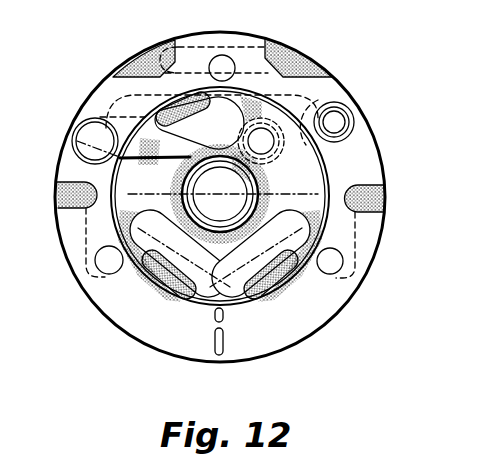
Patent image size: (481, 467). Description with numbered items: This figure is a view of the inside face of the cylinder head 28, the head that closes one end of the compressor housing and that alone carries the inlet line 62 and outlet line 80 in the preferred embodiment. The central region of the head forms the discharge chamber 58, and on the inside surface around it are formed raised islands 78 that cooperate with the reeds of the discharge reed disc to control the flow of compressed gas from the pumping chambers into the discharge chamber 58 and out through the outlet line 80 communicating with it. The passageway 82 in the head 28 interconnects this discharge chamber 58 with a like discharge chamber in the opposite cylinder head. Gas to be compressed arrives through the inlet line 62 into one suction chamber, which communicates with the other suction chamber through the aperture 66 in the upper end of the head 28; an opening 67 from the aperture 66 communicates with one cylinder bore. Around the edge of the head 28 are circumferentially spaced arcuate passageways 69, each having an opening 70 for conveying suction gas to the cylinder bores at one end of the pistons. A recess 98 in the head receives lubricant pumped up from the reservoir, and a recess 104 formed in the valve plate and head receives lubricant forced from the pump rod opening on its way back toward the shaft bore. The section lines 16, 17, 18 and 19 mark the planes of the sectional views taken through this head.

The section line 16- 16 is at (57, 140).
The section line 17- 17 is at (93, 142).
The section line 18- 18 is at (148, 198).
The section line 19- 19 is at (212, 152).
The cylinder head 28 is at (313, 337).
The discharge chamber 58 is at (308, 212).
The inlet line 62 is at (88, 115).
The aperture 66 is at (268, 38).
The opening 67 is at (220, 55).
The arcuate passageway 69 is at (58, 196).
The opening 70 is at (95, 259).
The raised island 78 is at (228, 112).
The outlet line 80 is at (263, 153).
The passageway 82 is at (316, 106).
The recess 98 is at (224, 342).
The recess 104 is at (214, 314).